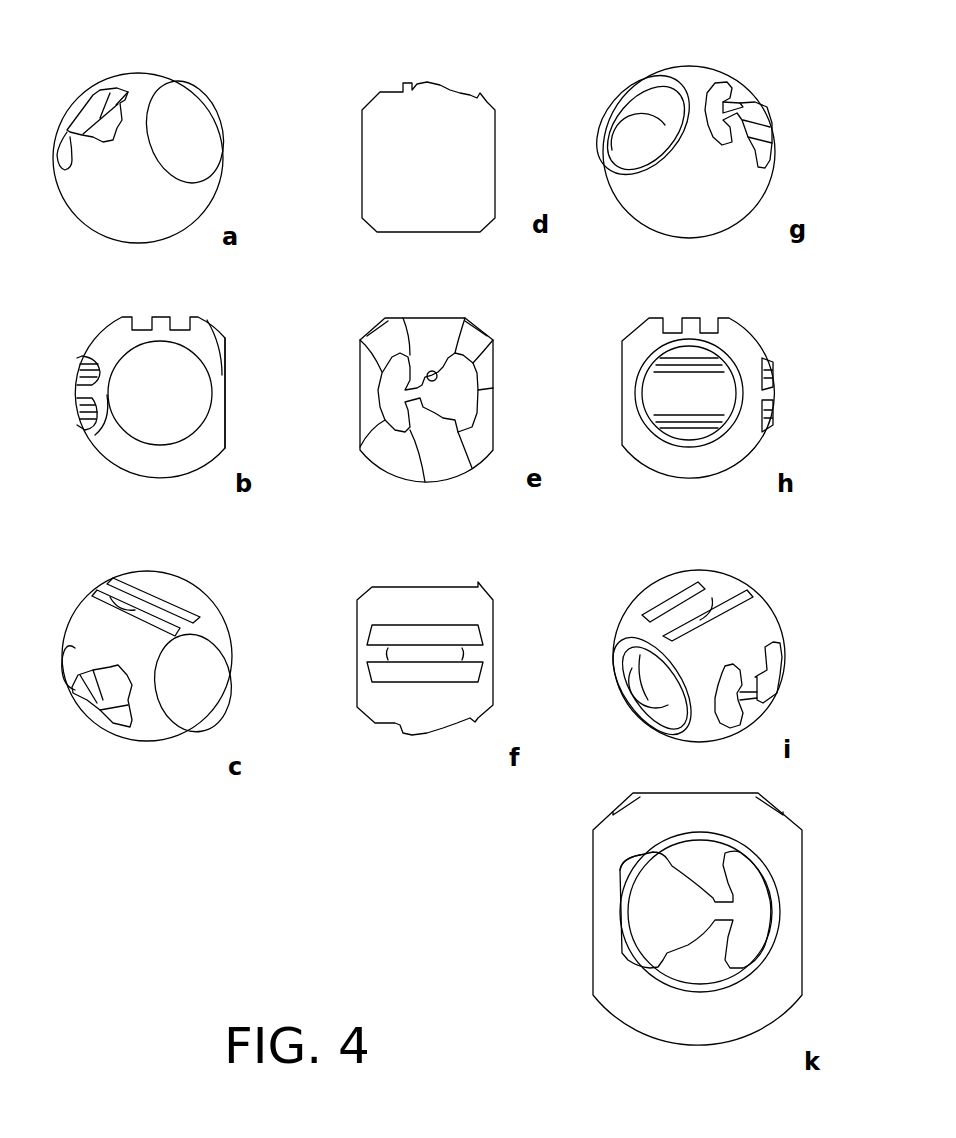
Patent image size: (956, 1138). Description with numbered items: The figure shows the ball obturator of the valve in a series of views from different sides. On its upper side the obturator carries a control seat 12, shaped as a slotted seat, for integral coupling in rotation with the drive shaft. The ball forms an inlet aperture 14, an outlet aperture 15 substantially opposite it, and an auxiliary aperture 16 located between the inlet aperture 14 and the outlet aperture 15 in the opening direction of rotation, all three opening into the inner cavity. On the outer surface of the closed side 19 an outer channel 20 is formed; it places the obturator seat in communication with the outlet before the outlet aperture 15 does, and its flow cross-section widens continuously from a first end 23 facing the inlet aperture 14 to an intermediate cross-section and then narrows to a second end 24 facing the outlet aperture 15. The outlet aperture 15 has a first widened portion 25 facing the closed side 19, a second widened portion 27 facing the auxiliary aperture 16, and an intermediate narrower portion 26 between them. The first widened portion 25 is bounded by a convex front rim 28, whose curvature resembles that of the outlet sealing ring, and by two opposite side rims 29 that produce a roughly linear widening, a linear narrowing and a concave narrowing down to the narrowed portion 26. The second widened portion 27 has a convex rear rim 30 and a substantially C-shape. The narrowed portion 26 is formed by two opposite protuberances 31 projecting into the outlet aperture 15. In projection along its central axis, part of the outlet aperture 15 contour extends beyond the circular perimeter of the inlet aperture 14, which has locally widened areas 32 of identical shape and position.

The control seat 12 is at (152, 322).
The inlet aperture 14 is at (425, 233).
The outlet aperture 15 is at (98, 108).
The auxiliary aperture 16 is at (650, 90).
The closed side 19 is at (185, 105).
The outer channel 20 is at (208, 135).
The first end 23 is at (222, 375).
The second end 24 is at (108, 400).
The first widened portion 25 is at (482, 345).
The intermediate narrower portion 26 is at (422, 470).
The second widened portion 27 is at (370, 355).
The front rim 28 is at (490, 392).
The side rims 29 is at (455, 345).
The rear rim 30 is at (380, 420).
The protuberances 31 is at (405, 350).
The locally widened areas 32 is at (615, 878).